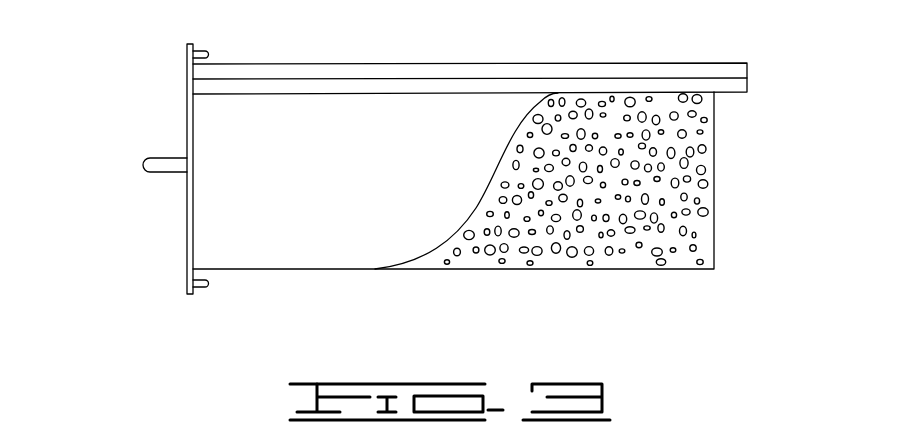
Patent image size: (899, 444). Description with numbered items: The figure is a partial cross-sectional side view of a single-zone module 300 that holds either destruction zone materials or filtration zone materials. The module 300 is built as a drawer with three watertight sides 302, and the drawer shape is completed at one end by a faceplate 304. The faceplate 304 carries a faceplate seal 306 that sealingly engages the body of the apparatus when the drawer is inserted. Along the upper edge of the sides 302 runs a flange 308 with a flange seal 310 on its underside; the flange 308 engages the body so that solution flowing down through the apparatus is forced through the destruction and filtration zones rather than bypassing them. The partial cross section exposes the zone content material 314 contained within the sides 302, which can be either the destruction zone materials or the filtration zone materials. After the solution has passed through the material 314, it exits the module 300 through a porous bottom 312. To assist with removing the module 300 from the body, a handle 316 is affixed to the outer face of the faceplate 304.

The single-zone module 300 is at (135, 78).
The watertight sides 302 is at (366, 188).
The faceplate 304 is at (187, 251).
The faceplate seal 306 is at (208, 284).
The flange 308 is at (735, 63).
The flange seal 310 is at (735, 93).
The porous bottom 312 is at (436, 271).
The zone content material 314 is at (685, 262).
The handle 316 is at (145, 165).